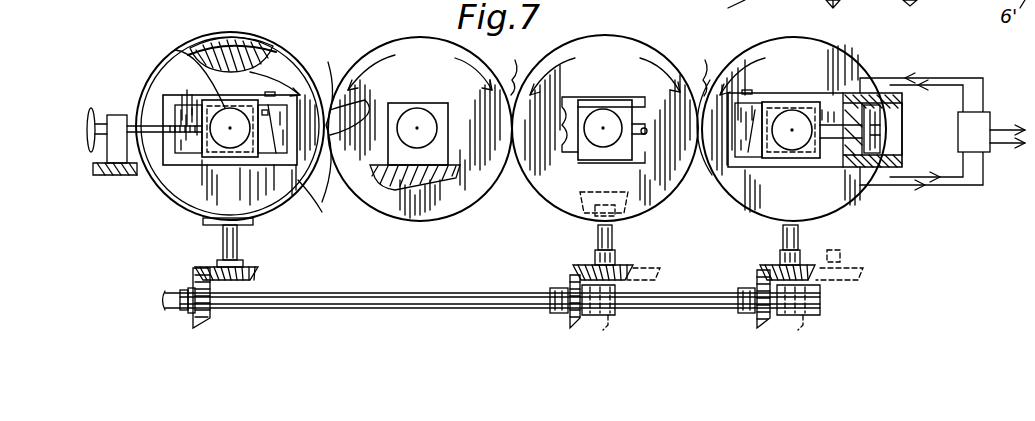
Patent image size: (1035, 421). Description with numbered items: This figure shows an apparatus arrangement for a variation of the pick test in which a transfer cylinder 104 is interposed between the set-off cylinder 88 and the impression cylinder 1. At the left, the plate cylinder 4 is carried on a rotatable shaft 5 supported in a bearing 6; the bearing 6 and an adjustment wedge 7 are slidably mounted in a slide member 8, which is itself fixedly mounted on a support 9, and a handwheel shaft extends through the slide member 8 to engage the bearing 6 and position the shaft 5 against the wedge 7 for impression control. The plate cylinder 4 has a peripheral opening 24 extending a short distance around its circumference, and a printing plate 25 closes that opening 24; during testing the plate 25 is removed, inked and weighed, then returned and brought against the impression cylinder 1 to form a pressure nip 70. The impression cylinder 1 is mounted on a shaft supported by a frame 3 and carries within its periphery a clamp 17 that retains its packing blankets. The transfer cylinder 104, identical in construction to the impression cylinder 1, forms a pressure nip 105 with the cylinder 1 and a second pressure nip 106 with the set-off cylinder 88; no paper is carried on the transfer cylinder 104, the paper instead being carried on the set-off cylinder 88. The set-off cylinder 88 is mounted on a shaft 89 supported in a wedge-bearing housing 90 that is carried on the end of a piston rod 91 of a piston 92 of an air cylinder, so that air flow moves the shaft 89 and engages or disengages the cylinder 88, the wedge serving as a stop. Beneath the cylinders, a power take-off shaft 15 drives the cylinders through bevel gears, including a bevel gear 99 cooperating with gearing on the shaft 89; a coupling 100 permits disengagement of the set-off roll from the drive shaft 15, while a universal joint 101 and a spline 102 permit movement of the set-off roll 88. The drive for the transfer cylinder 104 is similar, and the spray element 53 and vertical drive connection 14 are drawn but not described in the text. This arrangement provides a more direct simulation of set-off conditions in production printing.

The impression cylinder 1 is at (462, 200).
The frame 3 is at (725, 12).
The plate cylinder 4 is at (287, 166).
The rotatable shaft 5 is at (176, 50).
The bearing 6 is at (210, 152).
The adjustment wedge 7 is at (267, 152).
The slide member 8 is at (233, 133).
The support 9 is at (948, 0).
The vertical shaft 14 is at (220, 252).
The power take-off shaft 15 is at (415, 292).
The clamp 17 is at (368, 105).
The peripheral opening 24 is at (275, 48).
The printing plate 25 is at (240, 44).
The spray nozzle 53 is at (876, 0).
The pressure nip 70 is at (328, 72).
The set-off cylinder 88 is at (862, 198).
The shaft 89 is at (602, 124).
The wedge-bearing housing 90 is at (586, 104).
The piston rod 91 is at (648, 128).
The piston 92 is at (882, 129).
The bevel gear 99 is at (586, 206).
The coupling 100 is at (552, 314).
The universal joint 101 is at (616, 262).
The spline 102 is at (614, 242).
The transfer cylinder 104 is at (668, 198).
The pressure nip 105 is at (516, 67).
The second pressure nip 106 is at (708, 67).